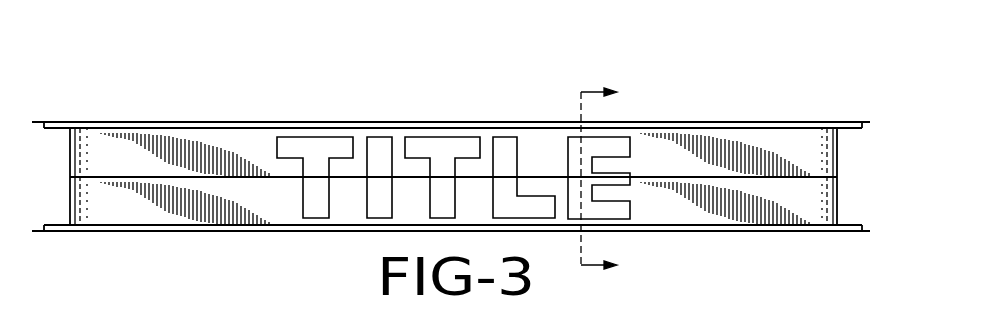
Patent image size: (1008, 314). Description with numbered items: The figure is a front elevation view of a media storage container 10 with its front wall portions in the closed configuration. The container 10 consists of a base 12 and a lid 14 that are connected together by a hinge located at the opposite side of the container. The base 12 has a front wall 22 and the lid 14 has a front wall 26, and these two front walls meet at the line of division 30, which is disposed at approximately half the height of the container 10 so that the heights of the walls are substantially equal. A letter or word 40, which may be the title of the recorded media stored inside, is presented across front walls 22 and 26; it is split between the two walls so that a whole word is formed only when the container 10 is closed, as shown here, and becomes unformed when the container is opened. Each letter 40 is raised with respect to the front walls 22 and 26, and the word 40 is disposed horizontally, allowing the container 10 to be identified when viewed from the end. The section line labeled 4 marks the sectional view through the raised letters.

The media storage container 10 is at (715, 98).
The base 12 is at (146, 235).
The lid 14 is at (146, 118).
The front wall 22 is at (252, 199).
The front wall 26 is at (247, 148).
The line of division 30 is at (763, 178).
The letter or word 40 is at (435, 132).
The section line 4- 4 is at (617, 180).